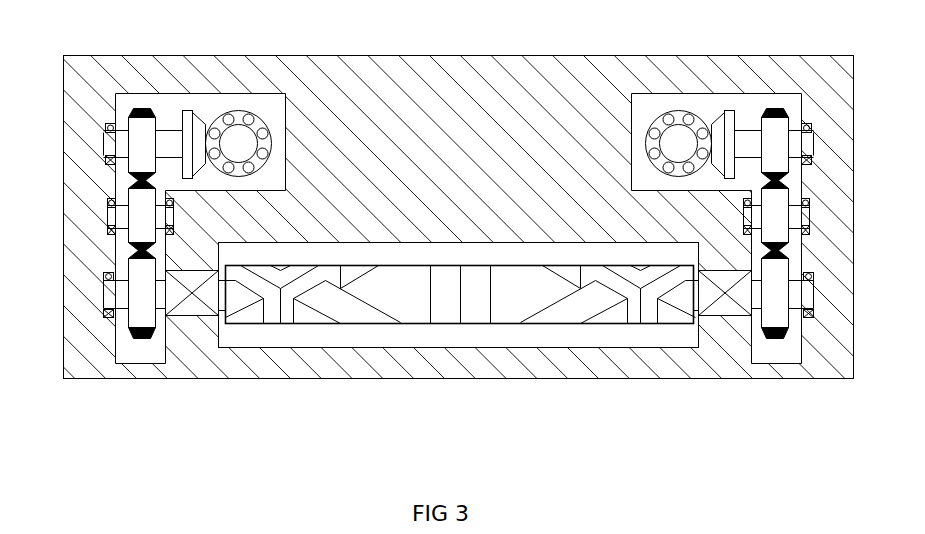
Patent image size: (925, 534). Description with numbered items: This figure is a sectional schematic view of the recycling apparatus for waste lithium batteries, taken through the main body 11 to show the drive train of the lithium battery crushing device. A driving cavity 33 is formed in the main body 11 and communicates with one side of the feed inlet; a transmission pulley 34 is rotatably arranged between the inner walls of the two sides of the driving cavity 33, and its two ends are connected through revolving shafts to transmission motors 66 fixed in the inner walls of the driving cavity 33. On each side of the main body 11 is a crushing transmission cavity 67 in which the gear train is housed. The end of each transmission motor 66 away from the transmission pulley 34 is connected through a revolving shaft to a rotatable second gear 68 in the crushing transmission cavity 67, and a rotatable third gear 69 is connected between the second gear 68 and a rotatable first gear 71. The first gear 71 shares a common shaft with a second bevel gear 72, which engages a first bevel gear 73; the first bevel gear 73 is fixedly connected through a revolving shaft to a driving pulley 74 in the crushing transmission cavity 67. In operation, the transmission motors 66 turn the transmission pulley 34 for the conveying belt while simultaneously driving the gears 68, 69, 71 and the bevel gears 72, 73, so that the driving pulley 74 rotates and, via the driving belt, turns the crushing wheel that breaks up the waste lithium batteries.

The main body 11 is at (468, 90).
The driving cavity 33 is at (473, 335).
The transmission pulley 34 is at (500, 302).
The transmission motor 66 is at (192, 308).
The crushing transmission cavity 67 is at (142, 350).
The second gear 68 is at (138, 318).
The third gear 69 is at (138, 216).
The first gear 71 is at (139, 122).
The second bevel gear 72 is at (186, 128).
The first bevel gear 73 is at (227, 133).
The driving pulley 74 is at (237, 137).